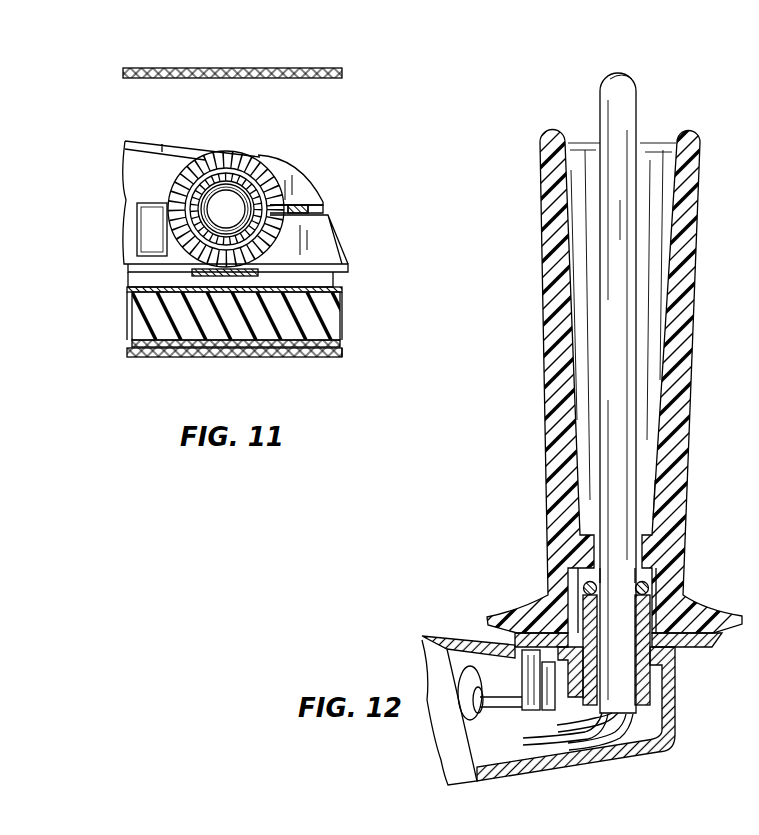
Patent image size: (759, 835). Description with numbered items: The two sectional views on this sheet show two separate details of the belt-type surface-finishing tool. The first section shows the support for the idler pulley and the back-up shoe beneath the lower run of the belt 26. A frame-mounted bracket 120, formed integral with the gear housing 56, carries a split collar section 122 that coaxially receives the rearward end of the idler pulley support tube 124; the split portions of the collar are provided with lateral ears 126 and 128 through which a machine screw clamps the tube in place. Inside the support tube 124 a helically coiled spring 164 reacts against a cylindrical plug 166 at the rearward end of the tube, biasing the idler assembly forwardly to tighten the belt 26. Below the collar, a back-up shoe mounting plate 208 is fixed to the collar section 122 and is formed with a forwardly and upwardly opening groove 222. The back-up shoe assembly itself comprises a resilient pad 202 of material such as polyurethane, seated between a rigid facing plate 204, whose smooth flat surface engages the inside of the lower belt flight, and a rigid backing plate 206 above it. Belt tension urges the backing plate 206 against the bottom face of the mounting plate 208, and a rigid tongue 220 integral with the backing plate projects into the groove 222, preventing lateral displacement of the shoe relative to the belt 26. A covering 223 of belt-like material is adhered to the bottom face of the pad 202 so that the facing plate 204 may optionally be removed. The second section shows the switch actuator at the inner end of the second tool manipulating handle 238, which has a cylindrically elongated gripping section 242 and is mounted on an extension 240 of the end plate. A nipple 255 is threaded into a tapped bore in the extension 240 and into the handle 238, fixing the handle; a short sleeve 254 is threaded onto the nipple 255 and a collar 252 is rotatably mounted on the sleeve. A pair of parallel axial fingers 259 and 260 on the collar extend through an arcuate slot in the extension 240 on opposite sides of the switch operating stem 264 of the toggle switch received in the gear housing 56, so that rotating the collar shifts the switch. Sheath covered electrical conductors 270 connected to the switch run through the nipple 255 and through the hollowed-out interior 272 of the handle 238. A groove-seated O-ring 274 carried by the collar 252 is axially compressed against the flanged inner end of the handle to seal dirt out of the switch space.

In FIG. 11, the belt 26 is at (254, 68).
In FIG. 11, the frame-mounted bracket 120 is at (160, 197).
In FIG. 11, the split collar section 122 is at (250, 160).
In FIG. 11, the idler pulley support tube 124 is at (206, 155).
In FIG. 11, the lateral ear 126 is at (310, 185).
In FIG. 11, the lateral ear 128 is at (318, 256).
In FIG. 11, the helically coiled spring 164 is at (255, 229).
In FIG. 11, the cylindrical plug 166 is at (238, 203).
In FIG. 11, the resilient pad 202 is at (335, 318).
In FIG. 11, the facing plate 204 is at (340, 346).
In FIG. 11, the backing plate 206 is at (128, 297).
In FIG. 11, the back-up shoe mounting plate 208 is at (130, 277).
In FIG. 11, the second rigid tongue 220 is at (260, 271).
In FIG. 11, the groove 222 is at (215, 264).
In FIG. 11, the covering 223 is at (300, 358).
In FIG. 12, the gear housing 56 is at (466, 784).
In FIG. 12, the second tool manipulating handle 238 is at (688, 501).
In FIG. 12, the extension 240 is at (462, 640).
In FIG. 12, the gripping section 242 is at (697, 346).
In FIG. 12, the collar 252 is at (538, 632).
In FIG. 12, the sleeve 254 is at (680, 606).
In FIG. 12, the nipple 255 is at (665, 672).
In FIG. 12, the axial finger 259 is at (524, 675).
In FIG. 12, the axial finger 260 is at (560, 703).
In FIG. 12, the switch operating stem 264 is at (510, 706).
In FIG. 12, the sheath covered electrical conductors 270 is at (603, 742).
In FIG. 12, the hollowed-out interior 272 is at (650, 443).
In FIG. 12, the O-ring 274 is at (690, 647).